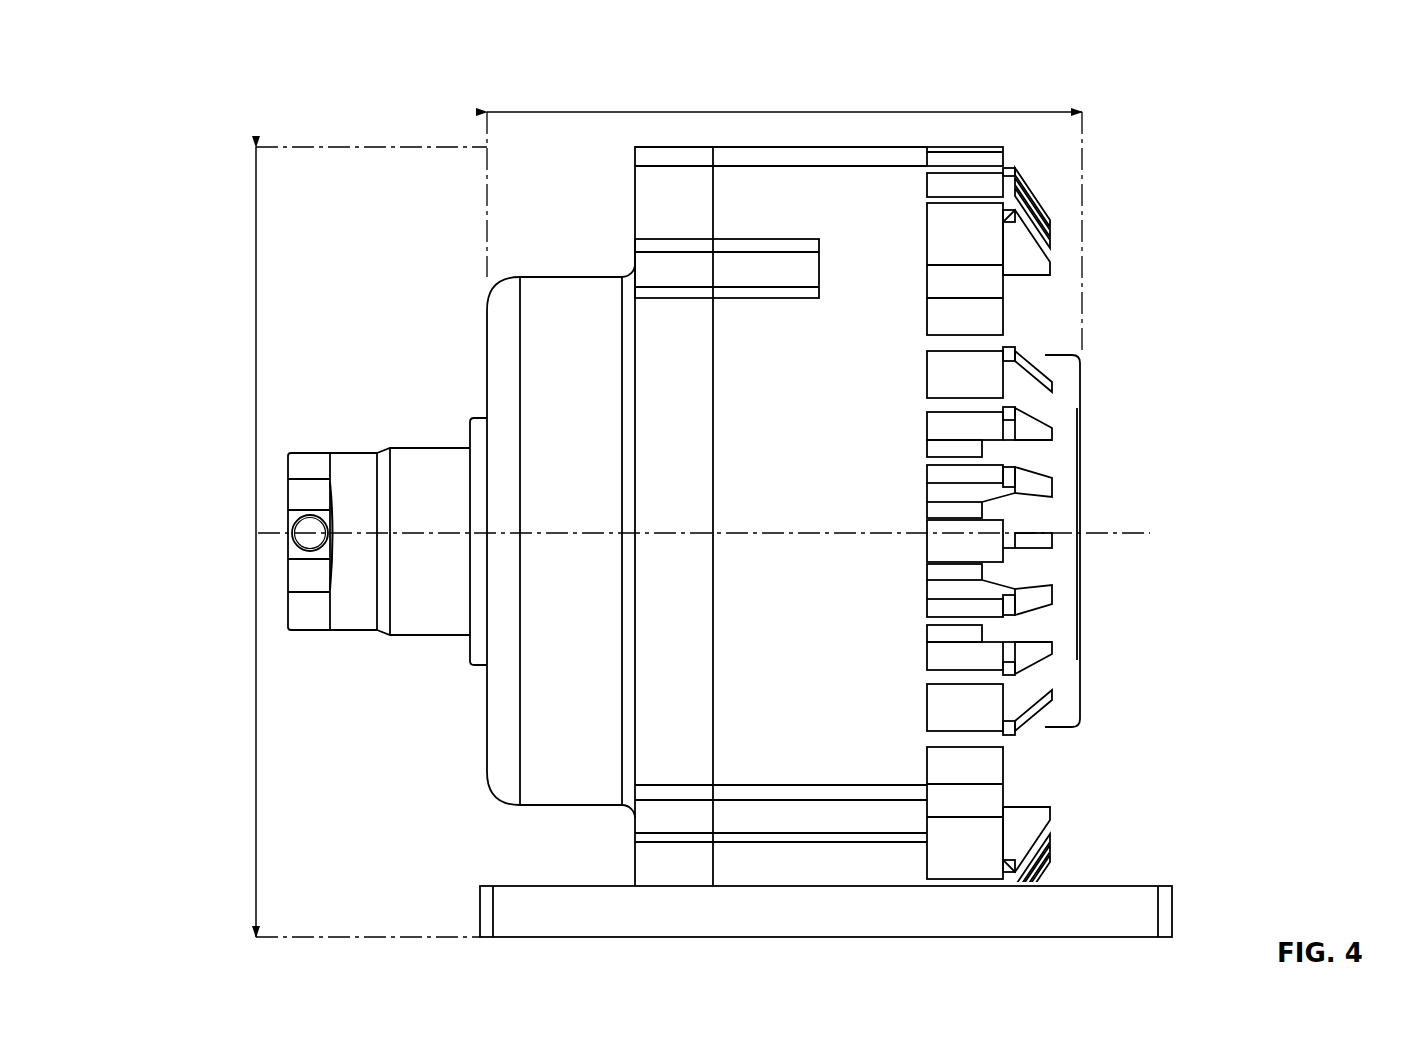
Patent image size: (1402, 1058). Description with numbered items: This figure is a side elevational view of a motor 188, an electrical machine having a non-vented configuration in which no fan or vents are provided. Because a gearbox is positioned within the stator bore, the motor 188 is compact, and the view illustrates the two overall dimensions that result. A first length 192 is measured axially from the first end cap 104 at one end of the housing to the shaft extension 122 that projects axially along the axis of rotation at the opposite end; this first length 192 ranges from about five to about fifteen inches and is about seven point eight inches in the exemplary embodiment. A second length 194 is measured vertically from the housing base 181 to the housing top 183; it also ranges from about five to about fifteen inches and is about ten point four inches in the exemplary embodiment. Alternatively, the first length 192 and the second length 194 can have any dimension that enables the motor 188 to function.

The motor 188 is at (288, 80).
The first length 192 is at (786, 110).
The housing top 183 is at (888, 146).
The first end cap 104 is at (487, 318).
The shaft extension 122 is at (1080, 357).
The second length 194 is at (256, 530).
The housing base 181 is at (480, 912).